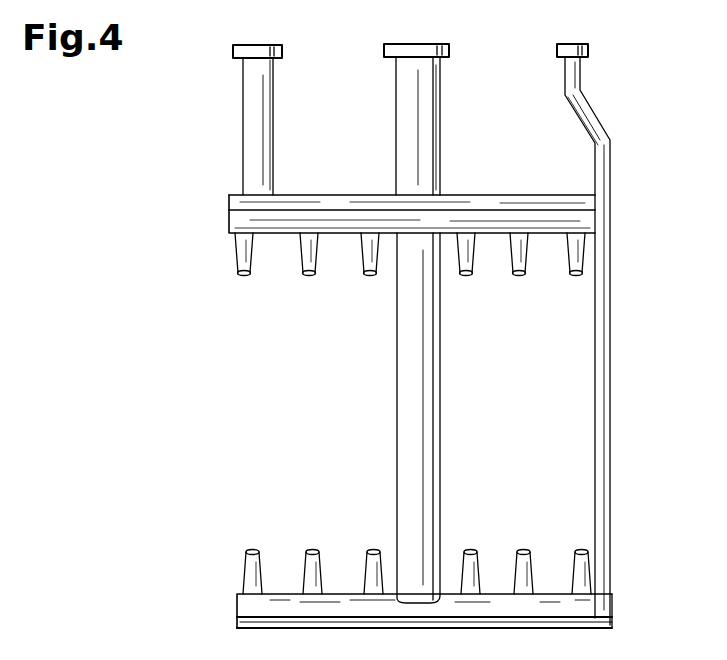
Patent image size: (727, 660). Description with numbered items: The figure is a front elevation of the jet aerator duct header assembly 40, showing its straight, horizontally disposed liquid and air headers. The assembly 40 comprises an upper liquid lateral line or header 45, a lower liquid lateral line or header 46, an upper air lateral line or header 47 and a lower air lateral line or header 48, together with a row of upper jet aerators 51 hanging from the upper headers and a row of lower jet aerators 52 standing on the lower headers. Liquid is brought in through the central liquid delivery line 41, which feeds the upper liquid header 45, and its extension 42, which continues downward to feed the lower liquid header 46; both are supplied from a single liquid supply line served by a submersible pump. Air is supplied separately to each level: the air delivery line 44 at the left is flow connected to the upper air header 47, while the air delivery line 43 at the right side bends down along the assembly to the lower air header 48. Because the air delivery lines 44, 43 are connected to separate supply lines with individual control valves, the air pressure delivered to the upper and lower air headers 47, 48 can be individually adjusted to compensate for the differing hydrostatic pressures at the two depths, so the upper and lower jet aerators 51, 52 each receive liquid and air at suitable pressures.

The jet aerator duct header assembly 40 is at (631, 195).
The liquid delivery line 41 is at (441, 124).
The extension of liquid delivery line 42 is at (441, 353).
The air delivery line 43 is at (603, 128).
The air delivery line 44 is at (243, 120).
The upper liquid lateral line or header 45 is at (229, 228).
The lower liquid lateral line or header 46 is at (237, 594).
The upper air lateral line or header 47 is at (229, 210).
The lower air lateral line or header 48 is at (237, 617).
The upper jet aerators 51 is at (304, 277).
The lower jet aerators 52 is at (521, 550).